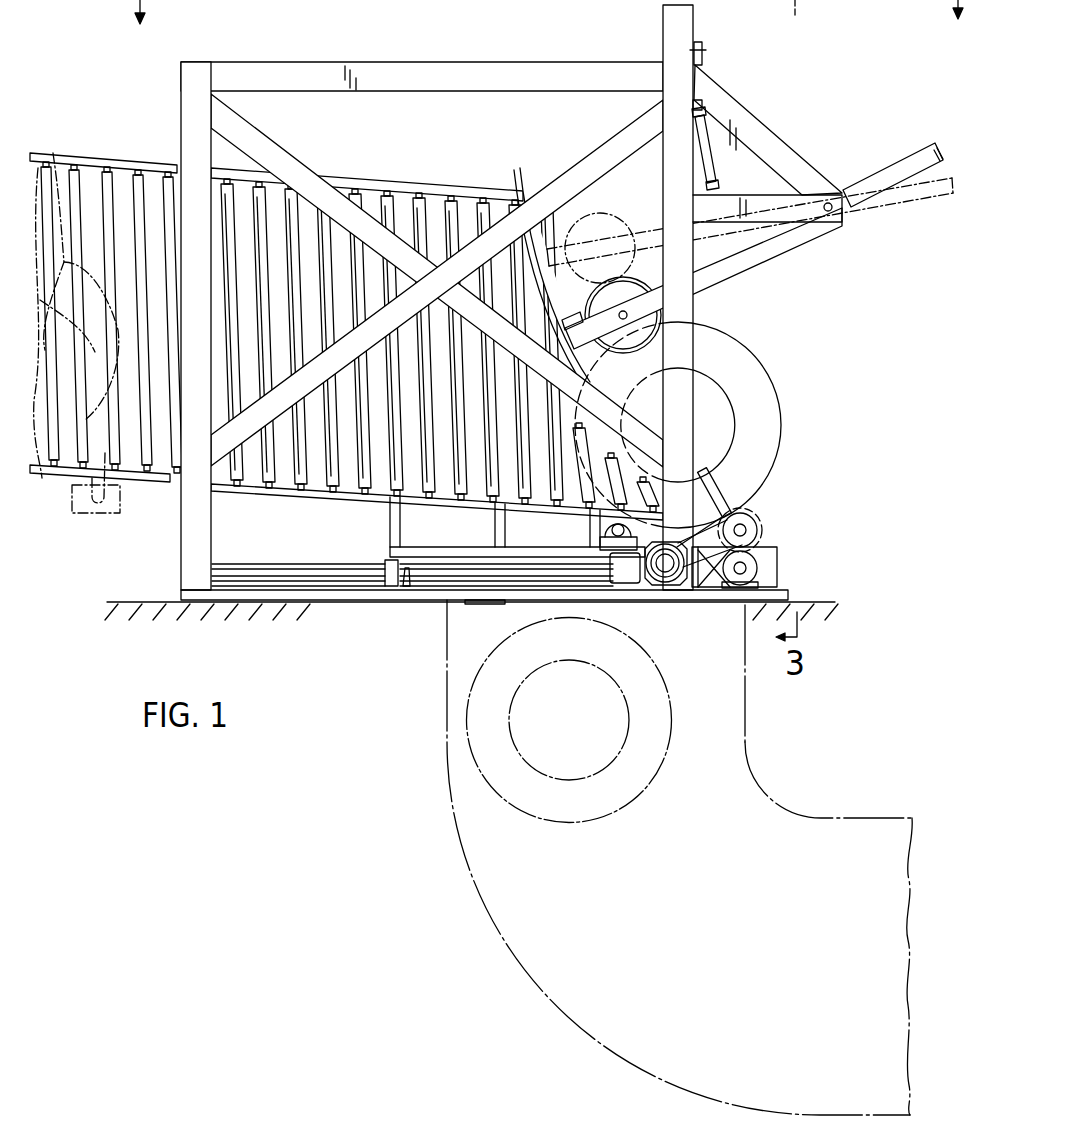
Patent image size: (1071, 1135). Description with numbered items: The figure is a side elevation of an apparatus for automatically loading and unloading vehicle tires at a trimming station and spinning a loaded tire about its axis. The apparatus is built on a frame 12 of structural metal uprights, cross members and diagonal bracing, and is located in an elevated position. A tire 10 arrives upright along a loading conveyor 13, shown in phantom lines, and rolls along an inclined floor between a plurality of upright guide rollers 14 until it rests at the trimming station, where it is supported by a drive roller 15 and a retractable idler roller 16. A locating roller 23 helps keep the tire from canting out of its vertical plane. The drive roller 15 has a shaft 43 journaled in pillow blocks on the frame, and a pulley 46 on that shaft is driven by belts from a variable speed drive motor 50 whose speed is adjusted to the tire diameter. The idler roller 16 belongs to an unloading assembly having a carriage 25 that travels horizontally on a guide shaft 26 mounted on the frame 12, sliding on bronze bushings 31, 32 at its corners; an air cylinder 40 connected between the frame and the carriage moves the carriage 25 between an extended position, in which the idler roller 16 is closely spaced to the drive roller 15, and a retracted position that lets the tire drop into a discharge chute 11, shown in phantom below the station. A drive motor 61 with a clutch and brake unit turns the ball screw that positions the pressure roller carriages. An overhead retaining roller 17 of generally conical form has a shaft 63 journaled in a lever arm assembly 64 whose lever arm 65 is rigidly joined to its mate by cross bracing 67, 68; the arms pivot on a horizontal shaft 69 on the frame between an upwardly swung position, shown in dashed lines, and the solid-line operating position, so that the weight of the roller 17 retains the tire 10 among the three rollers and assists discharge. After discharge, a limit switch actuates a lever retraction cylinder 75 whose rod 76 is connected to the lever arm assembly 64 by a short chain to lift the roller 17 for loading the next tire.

The tire 10 is at (780, 374).
The discharge chute 11 is at (516, 974).
The frame 12 is at (443, 62).
The loading conveyor 13 is at (135, 155).
The upright guide rollers 14 is at (240, 195).
The drive roller 15 is at (760, 528).
The retractable idler roller 16 is at (600, 530).
The overhead retaining roller 17 is at (630, 262).
The locating roller 23 is at (735, 495).
The carriage 25 is at (463, 540).
The guide shaft 26 is at (432, 572).
The bronze bushing 31 is at (395, 588).
The bronze bushing 32 is at (622, 584).
The air cylinder 40 is at (302, 570).
The shaft 43 is at (755, 536).
The pulley 46 is at (770, 550).
The variable speed drive motor 50 is at (665, 584).
The drive motor 61 is at (738, 588).
The shaft 63 is at (645, 336).
The lever arm assembly 64 is at (748, 273).
The lever arm 65 is at (890, 168).
The cross bracing 67 is at (940, 148).
The cross bracing 68 is at (582, 312).
The horizontal shaft 69 is at (829, 212).
The lever retraction cylinder 75 is at (702, 48).
The rod 76 is at (712, 160).